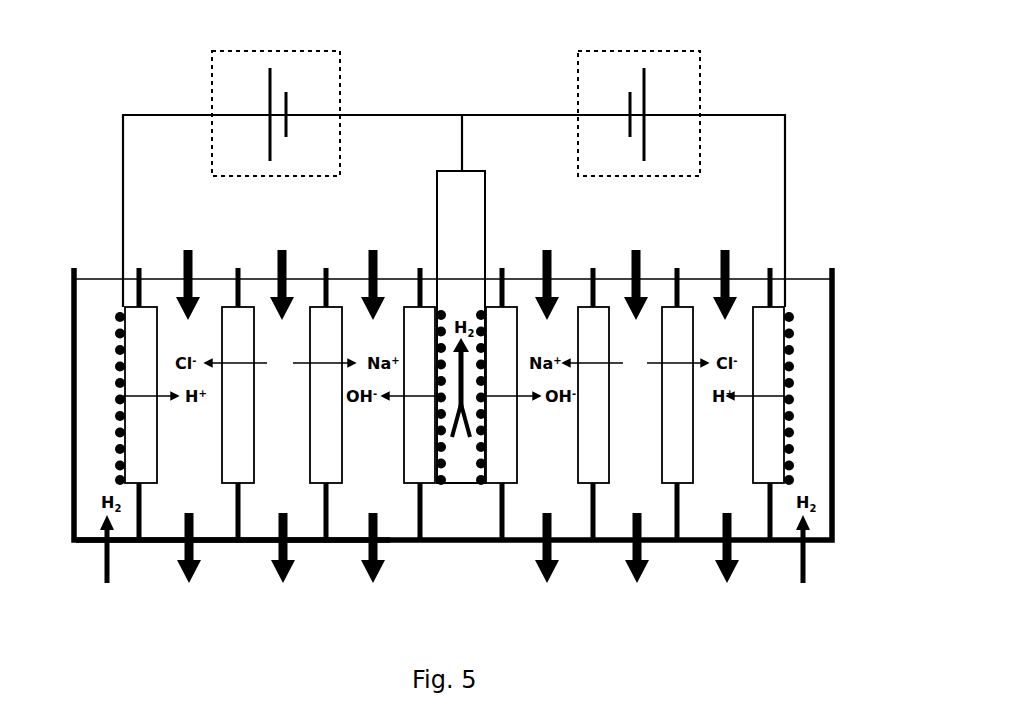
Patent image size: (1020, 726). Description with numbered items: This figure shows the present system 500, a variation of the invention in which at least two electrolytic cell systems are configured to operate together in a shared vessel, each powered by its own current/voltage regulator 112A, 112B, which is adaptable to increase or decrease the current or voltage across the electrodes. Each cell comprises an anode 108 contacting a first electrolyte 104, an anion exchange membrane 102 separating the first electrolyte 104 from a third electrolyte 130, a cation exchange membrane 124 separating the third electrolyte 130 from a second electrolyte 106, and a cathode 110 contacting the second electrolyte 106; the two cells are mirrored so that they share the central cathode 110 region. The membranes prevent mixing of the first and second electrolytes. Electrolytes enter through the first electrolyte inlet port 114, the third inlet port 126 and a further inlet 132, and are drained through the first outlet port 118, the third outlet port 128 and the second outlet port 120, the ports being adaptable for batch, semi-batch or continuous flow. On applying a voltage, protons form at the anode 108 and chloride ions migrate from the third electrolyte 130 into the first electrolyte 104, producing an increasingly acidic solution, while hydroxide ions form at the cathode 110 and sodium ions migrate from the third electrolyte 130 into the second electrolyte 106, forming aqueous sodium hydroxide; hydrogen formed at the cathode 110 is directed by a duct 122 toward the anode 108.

The system 500 is at (805, 95).
The current/voltage regulator 112A is at (340, 80).
The current/voltage regulator 112B is at (700, 77).
The anode 108 is at (122, 308).
The anion exchange membrane 102 is at (222, 307).
The cation exchange membrane 124 is at (309, 307).
The cathode 110 is at (405, 307).
The first electrolyte inlet port 114 is at (185, 258).
The third inlet port 126 is at (278, 258).
The inlet 132 is at (370, 258).
The first outlet port 118 is at (185, 583).
The third outlet port 128 is at (280, 583).
The second outlet port 120 is at (370, 583).
The duct 122 is at (103, 563).
The first electrolyte 104 is at (157, 522).
The third electrolyte 130 is at (248, 522).
The second electrolyte 106 is at (340, 522).